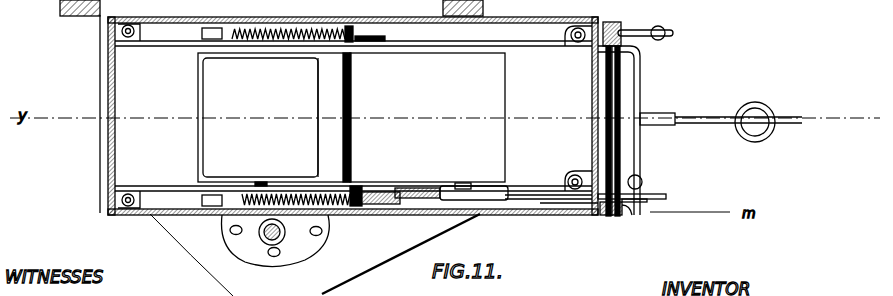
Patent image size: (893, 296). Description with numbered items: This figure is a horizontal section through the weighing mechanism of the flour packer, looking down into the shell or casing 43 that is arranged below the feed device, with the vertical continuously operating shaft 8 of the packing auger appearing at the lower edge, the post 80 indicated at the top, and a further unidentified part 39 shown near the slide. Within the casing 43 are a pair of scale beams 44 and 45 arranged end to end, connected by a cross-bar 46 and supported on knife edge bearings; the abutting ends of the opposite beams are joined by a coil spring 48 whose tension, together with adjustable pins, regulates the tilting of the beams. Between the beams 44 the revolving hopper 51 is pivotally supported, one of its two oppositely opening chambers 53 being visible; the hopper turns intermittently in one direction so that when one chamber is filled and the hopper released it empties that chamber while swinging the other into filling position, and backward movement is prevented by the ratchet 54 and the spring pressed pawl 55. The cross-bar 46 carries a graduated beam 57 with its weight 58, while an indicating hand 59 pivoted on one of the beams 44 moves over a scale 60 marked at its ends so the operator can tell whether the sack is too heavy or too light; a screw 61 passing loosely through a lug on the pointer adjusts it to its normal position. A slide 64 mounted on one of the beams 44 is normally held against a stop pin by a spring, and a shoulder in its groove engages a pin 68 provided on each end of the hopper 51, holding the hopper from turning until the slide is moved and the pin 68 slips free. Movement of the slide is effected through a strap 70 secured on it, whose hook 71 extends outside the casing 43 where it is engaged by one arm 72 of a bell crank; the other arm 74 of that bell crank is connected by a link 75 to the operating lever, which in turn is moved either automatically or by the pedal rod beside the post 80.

The vertical continuously operating shaft 8 is at (268, 240).
The slide block 39 is at (397, 195).
The casing 43 is at (110, 75).
The scale beam 44 is at (556, 48).
The scale beam 45 is at (172, 47).
The cross-bar 46 is at (644, 90).
The coil spring 48 is at (237, 212).
The revolving hopper 51 is at (424, 117).
The chamber 53 is at (201, 113).
The ratchet 54 is at (378, 206).
The spring pressed pawl 55 is at (407, 204).
The graduated beam 57 is at (702, 125).
The weight 58 is at (766, 107).
The indicating hand 59 is at (645, 203).
The scale 60 is at (668, 195).
The screw 61 is at (643, 182).
The slide 64 is at (470, 188).
The pin 68 is at (258, 186).
The strap 70 is at (598, 206).
The hook 71 is at (628, 216).
The arm of bell crank 72 is at (608, 215).
The arm of bell crank 74 is at (620, 34).
The link 75 is at (663, 30).
The post 80 is at (485, 6).